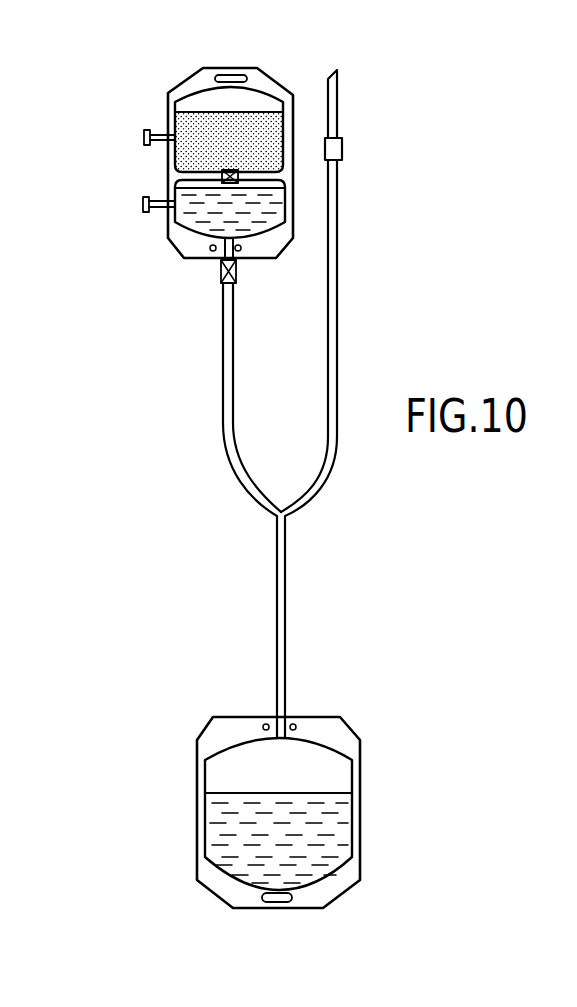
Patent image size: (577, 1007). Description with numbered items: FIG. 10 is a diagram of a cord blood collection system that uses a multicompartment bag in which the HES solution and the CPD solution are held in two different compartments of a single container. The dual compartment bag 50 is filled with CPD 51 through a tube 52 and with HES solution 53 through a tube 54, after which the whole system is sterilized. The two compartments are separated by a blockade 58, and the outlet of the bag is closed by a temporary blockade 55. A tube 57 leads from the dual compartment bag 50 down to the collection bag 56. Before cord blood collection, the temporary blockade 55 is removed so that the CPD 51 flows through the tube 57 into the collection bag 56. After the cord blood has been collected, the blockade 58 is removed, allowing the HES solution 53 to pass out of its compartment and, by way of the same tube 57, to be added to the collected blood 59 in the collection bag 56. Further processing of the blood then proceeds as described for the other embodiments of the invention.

The dual compartment bag 50 is at (200, 85).
The CPD 51 is at (190, 217).
The tube 52 is at (142, 204).
The HES solution 53 is at (200, 137).
The tube 54 is at (143, 138).
The temporary blockade 55 is at (220, 273).
The collection bag 56 is at (218, 730).
The tube 57 is at (278, 588).
The blockade 58 is at (226, 173).
The collected blood 59 is at (223, 817).